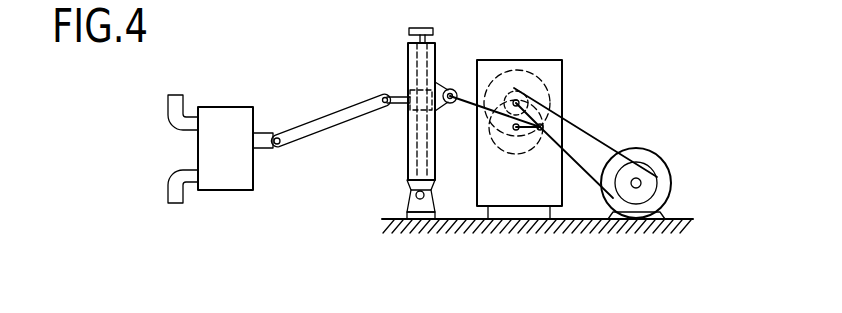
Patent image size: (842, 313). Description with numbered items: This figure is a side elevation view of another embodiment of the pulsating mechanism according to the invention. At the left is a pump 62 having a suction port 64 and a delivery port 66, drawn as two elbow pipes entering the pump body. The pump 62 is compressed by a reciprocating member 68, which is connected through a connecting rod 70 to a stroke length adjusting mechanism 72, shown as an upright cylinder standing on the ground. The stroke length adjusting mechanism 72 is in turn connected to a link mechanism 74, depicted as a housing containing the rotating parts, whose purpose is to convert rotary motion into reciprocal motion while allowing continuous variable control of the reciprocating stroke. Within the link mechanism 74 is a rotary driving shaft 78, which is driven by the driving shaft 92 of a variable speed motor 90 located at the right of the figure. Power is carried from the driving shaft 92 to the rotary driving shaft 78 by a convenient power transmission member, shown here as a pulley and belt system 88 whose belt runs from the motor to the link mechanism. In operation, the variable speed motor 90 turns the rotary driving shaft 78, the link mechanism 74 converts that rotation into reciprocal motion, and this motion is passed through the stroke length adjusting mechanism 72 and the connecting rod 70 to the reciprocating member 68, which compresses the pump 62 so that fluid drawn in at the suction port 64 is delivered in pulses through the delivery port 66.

The pump 62 is at (222, 123).
The suction port 64 is at (177, 190).
The delivery port 66 is at (175, 107).
The reciprocating member 68 is at (257, 145).
The connecting rod 70 is at (313, 127).
The stroke length adjusting mechanism 72 is at (412, 60).
The link mechanism 74 is at (530, 60).
The rotary driving shaft 78 is at (520, 100).
The pulley and belt system 88 is at (584, 126).
The variable speed motor 90 is at (655, 149).
The driving shaft 92 is at (641, 180).